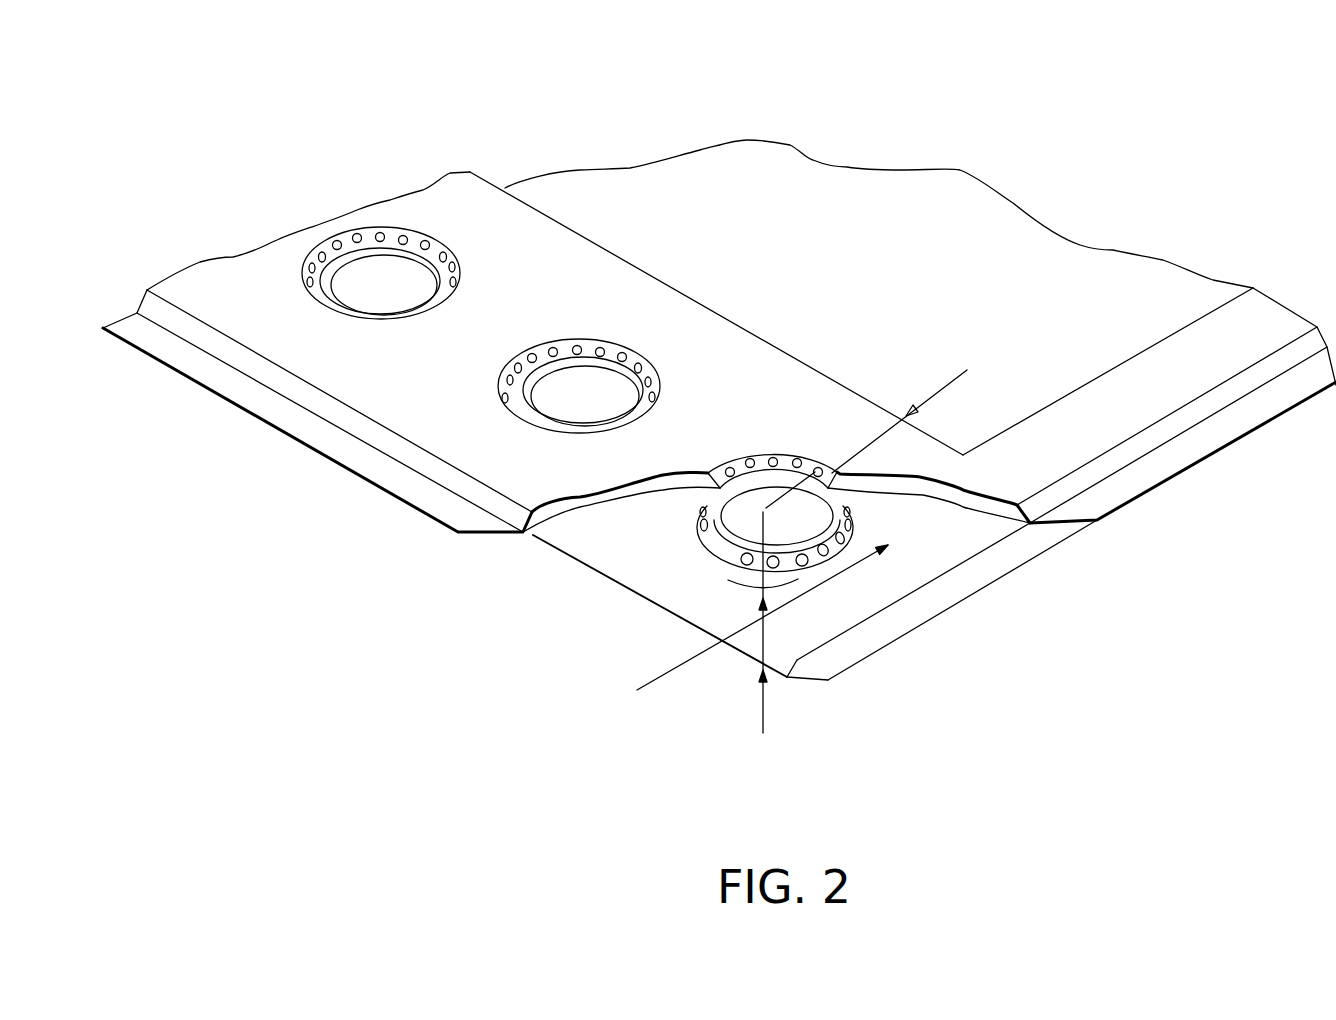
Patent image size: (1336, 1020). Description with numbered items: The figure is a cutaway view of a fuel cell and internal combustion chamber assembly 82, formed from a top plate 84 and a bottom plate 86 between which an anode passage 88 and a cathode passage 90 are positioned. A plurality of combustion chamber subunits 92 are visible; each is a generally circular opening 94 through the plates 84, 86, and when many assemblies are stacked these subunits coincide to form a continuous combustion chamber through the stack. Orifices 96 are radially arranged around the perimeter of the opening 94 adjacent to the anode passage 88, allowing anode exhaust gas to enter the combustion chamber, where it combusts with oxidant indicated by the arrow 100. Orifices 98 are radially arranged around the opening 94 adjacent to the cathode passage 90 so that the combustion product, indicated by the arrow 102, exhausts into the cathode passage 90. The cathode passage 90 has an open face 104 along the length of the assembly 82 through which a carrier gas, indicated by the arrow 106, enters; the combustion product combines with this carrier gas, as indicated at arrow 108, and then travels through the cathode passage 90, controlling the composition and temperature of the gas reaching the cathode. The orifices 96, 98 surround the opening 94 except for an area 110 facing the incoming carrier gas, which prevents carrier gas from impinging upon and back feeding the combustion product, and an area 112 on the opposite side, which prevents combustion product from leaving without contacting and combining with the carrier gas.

The fuel cell and internal combustion chamber assembly 82 is at (438, 128).
The top plate 84 is at (457, 448).
The bottom plate 86 is at (575, 568).
The anode passage 88 is at (950, 386).
The cathode passage 90 is at (580, 560).
The combustion chamber subunits 92 is at (342, 228).
The circular openings 94 is at (420, 262).
The orifices 96 is at (817, 470).
The orifices 98 is at (745, 565).
The oxidant flow arrow 100 is at (753, 725).
The combustion product flow arrow 102 is at (770, 514).
The open face 104 is at (552, 538).
The carrier gas flow arrow 106 is at (637, 690).
The combined gas flow arrow 108 is at (888, 545).
The area lacking orifices facing incoming carrier gas 110 is at (710, 542).
The area lacking orifices on opposite side 112 is at (847, 500).